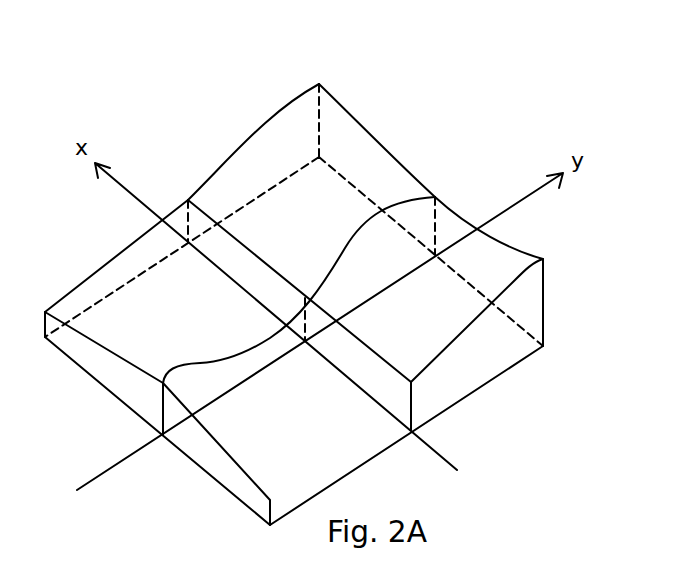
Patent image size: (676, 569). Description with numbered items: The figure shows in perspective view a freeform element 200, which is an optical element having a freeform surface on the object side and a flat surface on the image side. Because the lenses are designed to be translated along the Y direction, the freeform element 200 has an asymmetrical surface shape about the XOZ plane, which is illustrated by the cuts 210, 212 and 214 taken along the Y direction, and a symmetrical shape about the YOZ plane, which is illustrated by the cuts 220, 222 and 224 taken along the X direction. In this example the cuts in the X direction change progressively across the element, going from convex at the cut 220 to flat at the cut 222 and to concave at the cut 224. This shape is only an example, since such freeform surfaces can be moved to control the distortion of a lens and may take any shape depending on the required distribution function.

The freeform element 200 is at (294, 280).
The cut along the Y direction 210 is at (182, 198).
The cut along the Y direction 212 is at (299, 290).
The cut along the Y direction 214 is at (406, 392).
The cut along the X direction 220 is at (157, 418).
The cut along the X direction 222 is at (299, 291).
The cut along the X direction 224 is at (431, 171).